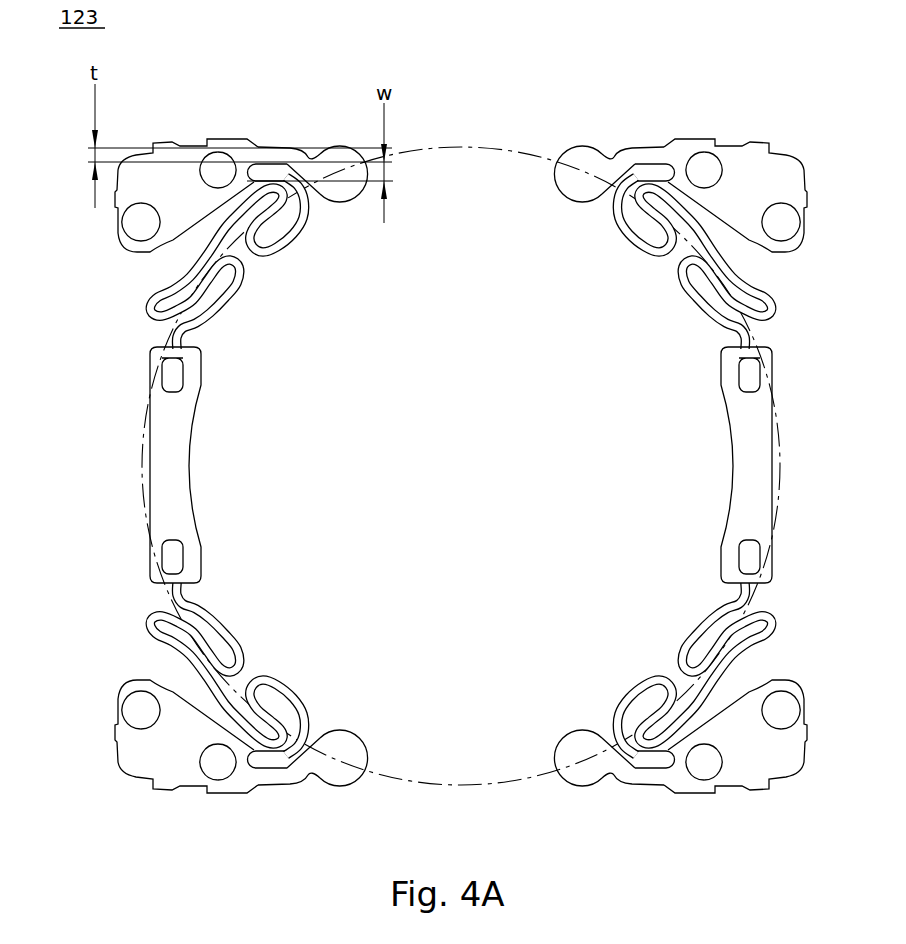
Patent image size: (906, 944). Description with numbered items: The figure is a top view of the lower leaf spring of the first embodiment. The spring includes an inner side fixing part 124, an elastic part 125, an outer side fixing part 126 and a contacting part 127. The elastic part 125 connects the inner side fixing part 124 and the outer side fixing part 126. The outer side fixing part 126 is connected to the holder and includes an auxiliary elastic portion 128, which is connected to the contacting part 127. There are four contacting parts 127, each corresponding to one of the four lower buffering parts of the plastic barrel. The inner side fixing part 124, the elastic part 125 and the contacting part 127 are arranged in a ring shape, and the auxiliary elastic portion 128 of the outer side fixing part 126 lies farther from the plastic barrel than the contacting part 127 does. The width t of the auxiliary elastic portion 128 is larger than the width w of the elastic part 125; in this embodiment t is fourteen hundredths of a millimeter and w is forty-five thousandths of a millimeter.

The inner side fixing part 124 is at (150, 556).
The elastic part 125 is at (151, 626).
The outer side fixing part 126 is at (132, 749).
The contacting part 127 is at (583, 162).
The auxiliary elastic portion 128 is at (641, 158).